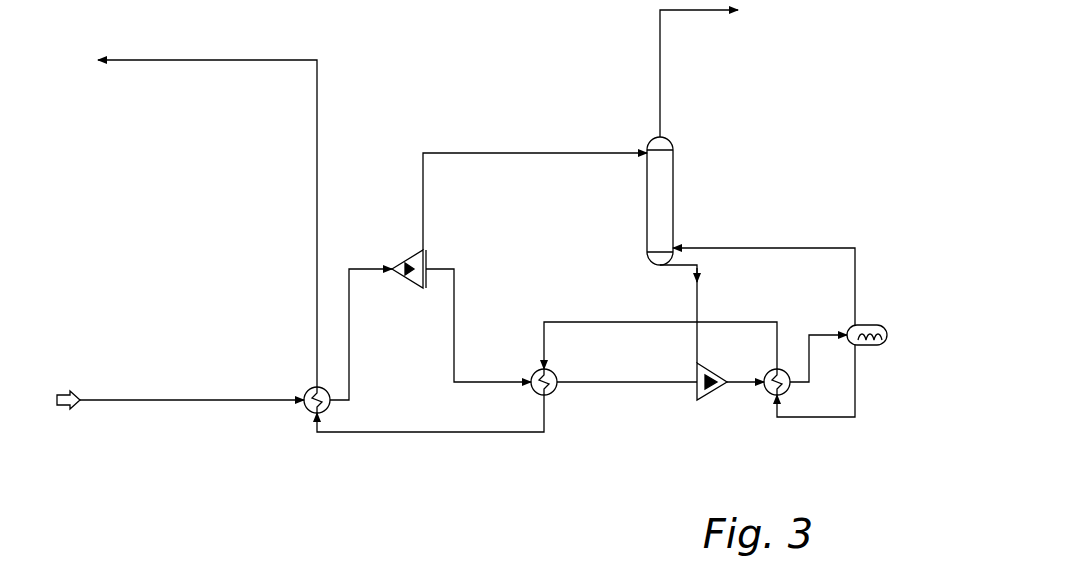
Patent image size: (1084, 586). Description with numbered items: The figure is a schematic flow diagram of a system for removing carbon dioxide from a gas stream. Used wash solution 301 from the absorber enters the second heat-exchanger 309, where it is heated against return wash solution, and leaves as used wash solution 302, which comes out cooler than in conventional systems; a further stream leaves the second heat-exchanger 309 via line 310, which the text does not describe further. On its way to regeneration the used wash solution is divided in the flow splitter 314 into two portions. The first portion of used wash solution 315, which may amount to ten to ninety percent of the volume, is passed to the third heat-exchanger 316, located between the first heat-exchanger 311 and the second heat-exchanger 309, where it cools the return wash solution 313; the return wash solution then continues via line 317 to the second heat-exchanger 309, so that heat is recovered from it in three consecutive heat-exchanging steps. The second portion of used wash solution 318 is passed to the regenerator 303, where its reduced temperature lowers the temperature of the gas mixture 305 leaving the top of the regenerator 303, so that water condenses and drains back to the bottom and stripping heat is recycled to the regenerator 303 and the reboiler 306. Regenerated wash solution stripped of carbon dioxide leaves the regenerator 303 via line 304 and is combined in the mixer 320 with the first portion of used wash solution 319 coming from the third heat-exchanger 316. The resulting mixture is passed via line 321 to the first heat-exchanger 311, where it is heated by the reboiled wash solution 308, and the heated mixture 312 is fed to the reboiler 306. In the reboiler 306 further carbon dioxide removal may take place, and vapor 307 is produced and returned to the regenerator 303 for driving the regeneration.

The used wash solution 301 is at (200, 403).
The used wash solution 302 is at (352, 310).
The regenerator 303 is at (663, 190).
The line 304 is at (698, 292).
The gas mixture 305 is at (661, 75).
The reboiler 306 is at (883, 329).
The vapor 307 is at (856, 269).
The reboiled wash solution 308 is at (856, 375).
The second heat-exchanger 309 is at (307, 411).
The cooled product stream 310 is at (317, 224).
The first heat-exchanger 311 is at (768, 398).
The heated mixture 312 is at (793, 380).
The return wash solution 313 is at (602, 318).
The flow splitter 314 is at (410, 255).
The first portion of used wash solution 315 is at (450, 345).
The third heat-exchanger 316 is at (553, 393).
The line 317 is at (432, 435).
The second portion of used wash solution 318 is at (427, 216).
The first portion of used wash solution 319 is at (610, 386).
The mixer 320 is at (703, 400).
The line 321 is at (742, 384).